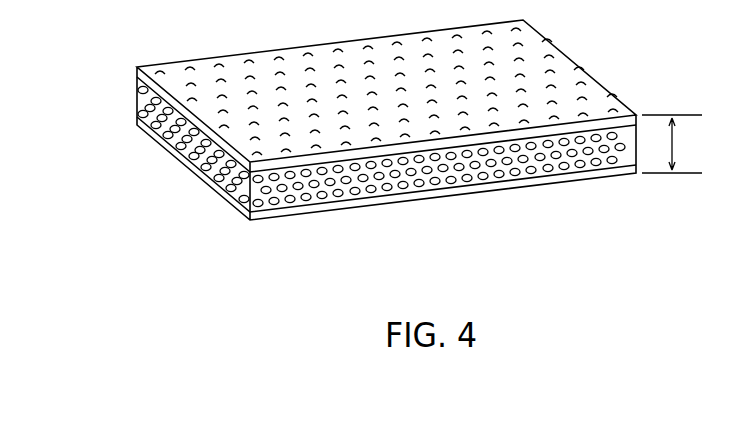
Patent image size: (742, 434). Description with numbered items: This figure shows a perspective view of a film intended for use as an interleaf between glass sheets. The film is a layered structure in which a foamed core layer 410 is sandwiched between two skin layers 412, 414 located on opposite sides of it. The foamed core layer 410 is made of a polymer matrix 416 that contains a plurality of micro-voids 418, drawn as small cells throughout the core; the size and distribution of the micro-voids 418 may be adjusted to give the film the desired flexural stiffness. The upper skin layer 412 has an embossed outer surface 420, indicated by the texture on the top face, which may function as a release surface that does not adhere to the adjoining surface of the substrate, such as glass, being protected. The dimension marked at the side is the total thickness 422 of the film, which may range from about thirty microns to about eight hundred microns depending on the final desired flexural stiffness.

The foamed core layer 410 is at (137, 96).
The skin layer 412 is at (137, 69).
The skin layer 414 is at (137, 122).
The polymer matrix 416 is at (297, 202).
The micro-voids 418 is at (427, 185).
The embossed outer surface 420 is at (548, 60).
The total thickness 422 is at (672, 144).